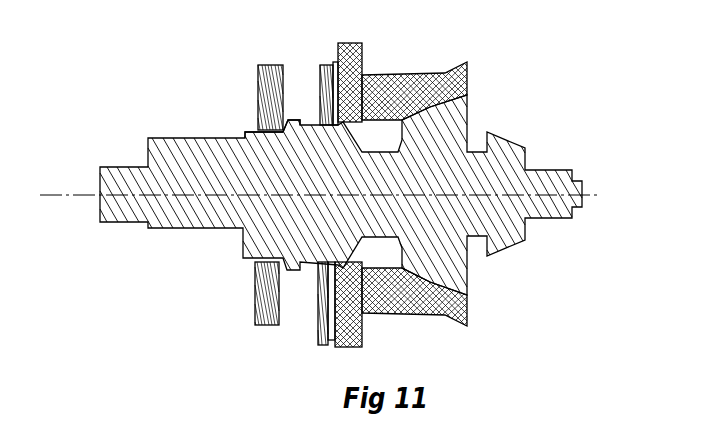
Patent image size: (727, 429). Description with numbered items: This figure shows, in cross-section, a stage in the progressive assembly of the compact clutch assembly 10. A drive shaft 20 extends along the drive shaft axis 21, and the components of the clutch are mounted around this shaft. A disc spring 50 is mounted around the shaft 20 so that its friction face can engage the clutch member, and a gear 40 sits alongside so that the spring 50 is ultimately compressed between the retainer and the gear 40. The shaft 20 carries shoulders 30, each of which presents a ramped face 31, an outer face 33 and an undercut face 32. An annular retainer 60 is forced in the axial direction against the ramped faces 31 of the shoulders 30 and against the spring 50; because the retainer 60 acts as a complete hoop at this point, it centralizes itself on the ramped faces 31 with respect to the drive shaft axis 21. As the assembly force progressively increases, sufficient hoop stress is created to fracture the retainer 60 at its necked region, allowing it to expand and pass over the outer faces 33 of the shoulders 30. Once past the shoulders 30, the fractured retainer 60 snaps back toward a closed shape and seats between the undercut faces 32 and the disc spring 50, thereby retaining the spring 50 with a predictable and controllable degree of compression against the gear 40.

The rotor assembly 10 is at (518, 86).
The drive shaft 20 is at (123, 167).
The drive shaft axis 21 is at (60, 197).
The shoulders 30 is at (294, 292).
The ramped faces 31 is at (258, 124).
The undercut faces 32 is at (362, 55).
The outer faces 33 is at (298, 120).
The gear 40 is at (410, 316).
The disc spring 50 is at (320, 72).
The annular retainer 60 is at (255, 292).